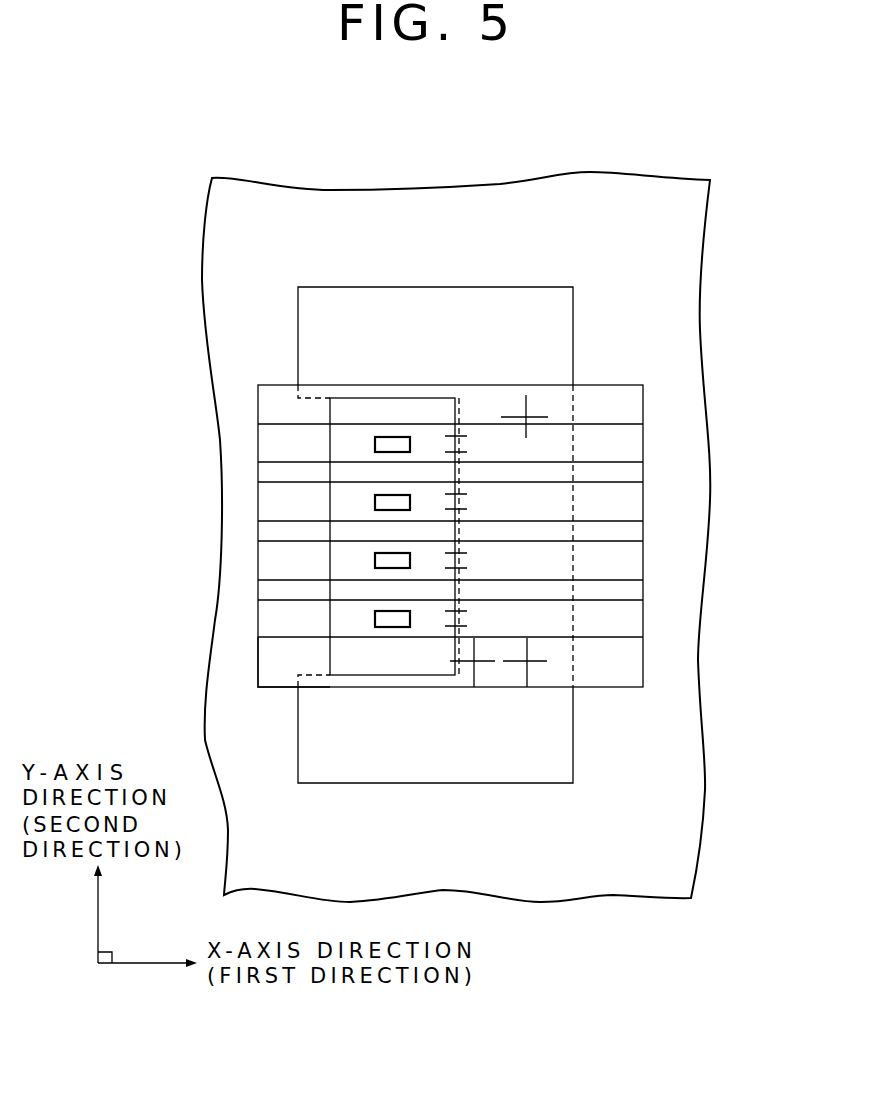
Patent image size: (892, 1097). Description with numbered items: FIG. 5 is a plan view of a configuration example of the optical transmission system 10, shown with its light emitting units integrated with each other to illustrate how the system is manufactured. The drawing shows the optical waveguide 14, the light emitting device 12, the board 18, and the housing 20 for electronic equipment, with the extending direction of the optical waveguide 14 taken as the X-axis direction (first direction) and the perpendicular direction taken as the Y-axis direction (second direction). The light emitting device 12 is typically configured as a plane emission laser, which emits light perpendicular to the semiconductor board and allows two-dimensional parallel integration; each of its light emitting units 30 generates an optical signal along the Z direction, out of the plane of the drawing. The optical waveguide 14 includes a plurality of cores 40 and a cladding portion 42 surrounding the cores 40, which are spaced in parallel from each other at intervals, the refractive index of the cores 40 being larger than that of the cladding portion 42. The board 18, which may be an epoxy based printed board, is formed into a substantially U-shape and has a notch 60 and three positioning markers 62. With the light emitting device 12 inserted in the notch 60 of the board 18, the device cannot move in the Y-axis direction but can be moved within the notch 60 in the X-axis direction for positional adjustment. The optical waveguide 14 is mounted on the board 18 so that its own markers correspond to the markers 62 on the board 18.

The optical transmission system 10 is at (428, 166).
The light emitting device 12 is at (318, 593).
The optical waveguide 14 is at (643, 403).
The board 18 is at (488, 303).
The housing 20 is at (594, 898).
The light emitting units 30 is at (383, 443).
The cores 40 is at (606, 445).
The cladding portion 42 is at (612, 660).
The notch 60 is at (316, 676).
The positioning marker 62 is at (527, 400).